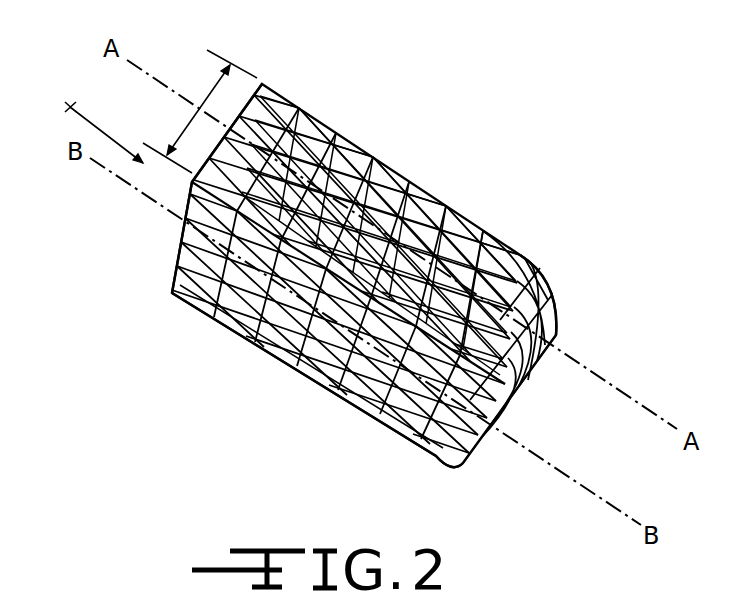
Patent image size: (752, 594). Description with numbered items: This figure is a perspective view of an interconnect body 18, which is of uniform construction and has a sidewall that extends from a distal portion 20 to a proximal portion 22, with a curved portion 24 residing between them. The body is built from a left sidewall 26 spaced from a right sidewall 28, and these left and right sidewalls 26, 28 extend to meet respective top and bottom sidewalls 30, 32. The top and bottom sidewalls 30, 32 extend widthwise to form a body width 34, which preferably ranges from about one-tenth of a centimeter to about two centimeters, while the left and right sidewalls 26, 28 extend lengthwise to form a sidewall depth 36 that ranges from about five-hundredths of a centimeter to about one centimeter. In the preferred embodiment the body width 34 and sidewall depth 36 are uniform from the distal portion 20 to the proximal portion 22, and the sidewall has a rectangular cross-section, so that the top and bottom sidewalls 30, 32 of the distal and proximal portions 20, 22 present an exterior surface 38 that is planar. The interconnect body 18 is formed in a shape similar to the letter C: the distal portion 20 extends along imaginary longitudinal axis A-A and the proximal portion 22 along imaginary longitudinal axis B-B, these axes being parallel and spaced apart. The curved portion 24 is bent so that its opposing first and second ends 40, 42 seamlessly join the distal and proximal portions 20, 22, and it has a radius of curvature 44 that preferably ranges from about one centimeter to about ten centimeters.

The interconnect body 18 is at (376, 133).
The distal portion 20 is at (420, 186).
The proximal portion 22 is at (316, 380).
The curved portion 24 is at (553, 337).
The left sidewall 26 is at (263, 364).
The right sidewall 28 is at (459, 215).
The top sidewall 30 is at (247, 110).
The bottom sidewall 32 is at (193, 253).
The body width 34 is at (200, 108).
The sidewall depth 36 is at (223, 334).
The exterior surface 38 is at (400, 195).
The first end 40 is at (516, 257).
The second end 42 is at (428, 458).
The radius of curvature 44 is at (100, 127).